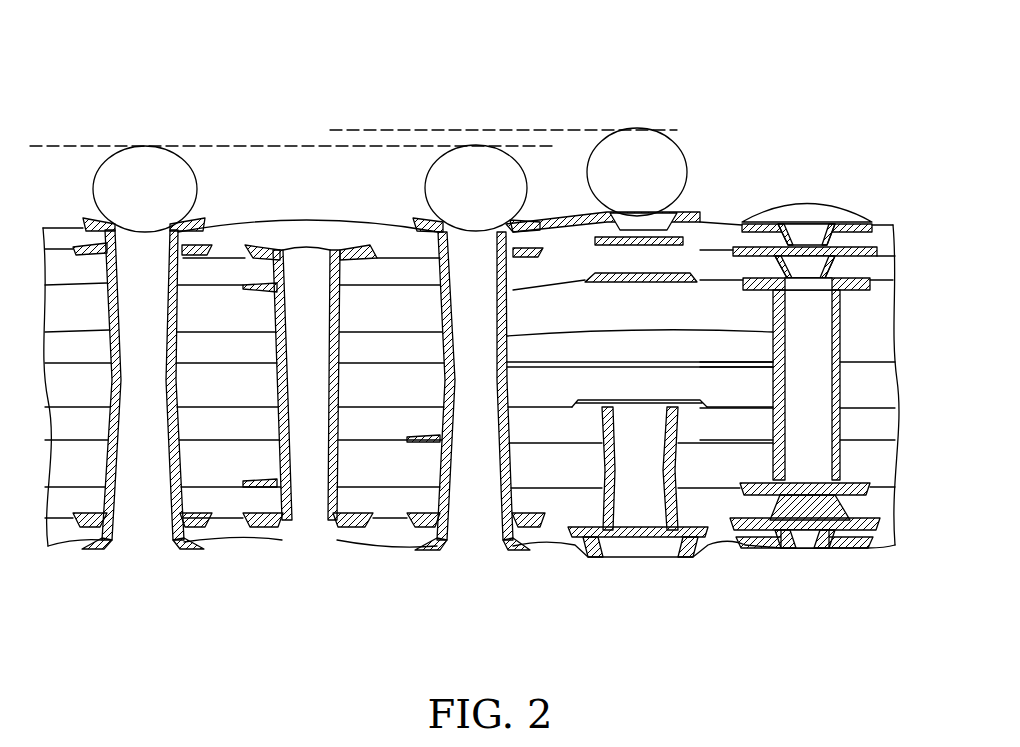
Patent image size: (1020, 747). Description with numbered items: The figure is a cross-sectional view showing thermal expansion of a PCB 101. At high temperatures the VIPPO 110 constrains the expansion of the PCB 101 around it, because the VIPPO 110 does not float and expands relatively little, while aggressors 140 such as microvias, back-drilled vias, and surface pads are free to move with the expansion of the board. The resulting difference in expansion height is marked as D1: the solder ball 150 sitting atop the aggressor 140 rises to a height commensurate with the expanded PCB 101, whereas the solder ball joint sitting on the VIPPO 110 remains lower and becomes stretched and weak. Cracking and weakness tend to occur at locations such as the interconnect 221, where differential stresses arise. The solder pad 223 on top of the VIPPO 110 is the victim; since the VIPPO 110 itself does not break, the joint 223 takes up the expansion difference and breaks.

The PCB 101 is at (900, 380).
The VIPPO 110 is at (309, 414).
The aggressor 140 is at (638, 508).
The solder ball 150 is at (638, 153).
The interconnect 221 is at (553, 225).
The solder pad 223 is at (418, 225).
The difference in expansion height D1 is at (372, 150).